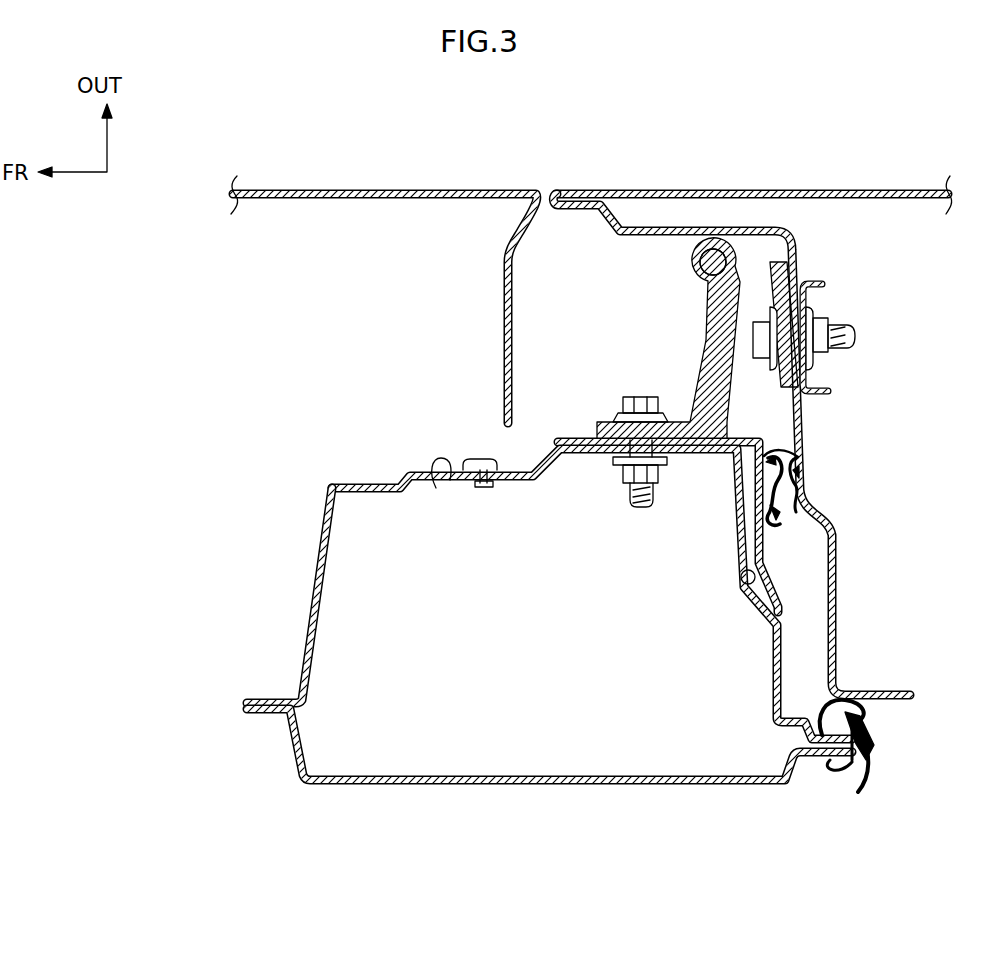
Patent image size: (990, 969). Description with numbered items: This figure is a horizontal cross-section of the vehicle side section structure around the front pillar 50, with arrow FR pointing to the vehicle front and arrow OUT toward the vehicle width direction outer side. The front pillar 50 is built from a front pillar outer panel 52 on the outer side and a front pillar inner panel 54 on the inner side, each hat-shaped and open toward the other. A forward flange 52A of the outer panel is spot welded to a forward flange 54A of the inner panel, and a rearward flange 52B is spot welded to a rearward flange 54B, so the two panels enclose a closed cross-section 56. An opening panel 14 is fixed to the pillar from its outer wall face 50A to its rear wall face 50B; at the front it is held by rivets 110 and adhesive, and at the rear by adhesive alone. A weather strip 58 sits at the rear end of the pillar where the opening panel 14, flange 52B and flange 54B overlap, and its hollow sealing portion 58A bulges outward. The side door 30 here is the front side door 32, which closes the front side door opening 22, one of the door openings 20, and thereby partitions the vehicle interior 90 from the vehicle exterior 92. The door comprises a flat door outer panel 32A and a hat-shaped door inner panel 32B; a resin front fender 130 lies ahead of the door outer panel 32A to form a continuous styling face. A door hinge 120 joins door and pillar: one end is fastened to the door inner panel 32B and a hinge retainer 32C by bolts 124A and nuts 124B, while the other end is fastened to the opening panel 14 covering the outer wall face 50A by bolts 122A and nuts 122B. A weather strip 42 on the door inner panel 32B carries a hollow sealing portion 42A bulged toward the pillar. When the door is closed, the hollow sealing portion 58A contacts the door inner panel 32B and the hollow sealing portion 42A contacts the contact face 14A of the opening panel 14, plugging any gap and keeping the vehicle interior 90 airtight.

The front fender 130 is at (331, 189).
The front side door 32 is at (779, 191).
The side door 30 is at (731, 391).
The vehicle exterior 92 is at (908, 100).
The door outer panel 32A is at (862, 190).
The door hinge 120 is at (704, 338).
The nut 124B is at (836, 322).
The bolt 122A is at (641, 396).
The hinge retainer 32C is at (832, 388).
The rivet 110 is at (483, 458).
The front pillar outer panel 52 is at (358, 483).
The bolt 124A is at (764, 360).
The hollow sealing portion 42A is at (792, 456).
The front pillar 50 is at (302, 606).
The outer wall face 50A is at (436, 488).
The nut 122B is at (630, 487).
The rear wall face 50B is at (741, 577).
The closed cross-section 56 is at (510, 643).
The weather strip 42 is at (820, 517).
The door inner panel 32B is at (838, 575).
The contact face 14A is at (765, 531).
The opening panel 14 is at (782, 607).
The flange 52A is at (248, 703).
The front side door opening 22 is at (793, 667).
The door opening 20 is at (871, 661).
The flange 52B is at (800, 726).
The hollow sealing portion 58A is at (872, 712).
The flange 54A is at (248, 711).
The weather strip 58 is at (876, 760).
The flange 54B is at (811, 770).
The vehicle interior 90 is at (928, 869).
The front pillar inner panel 54 is at (440, 786).